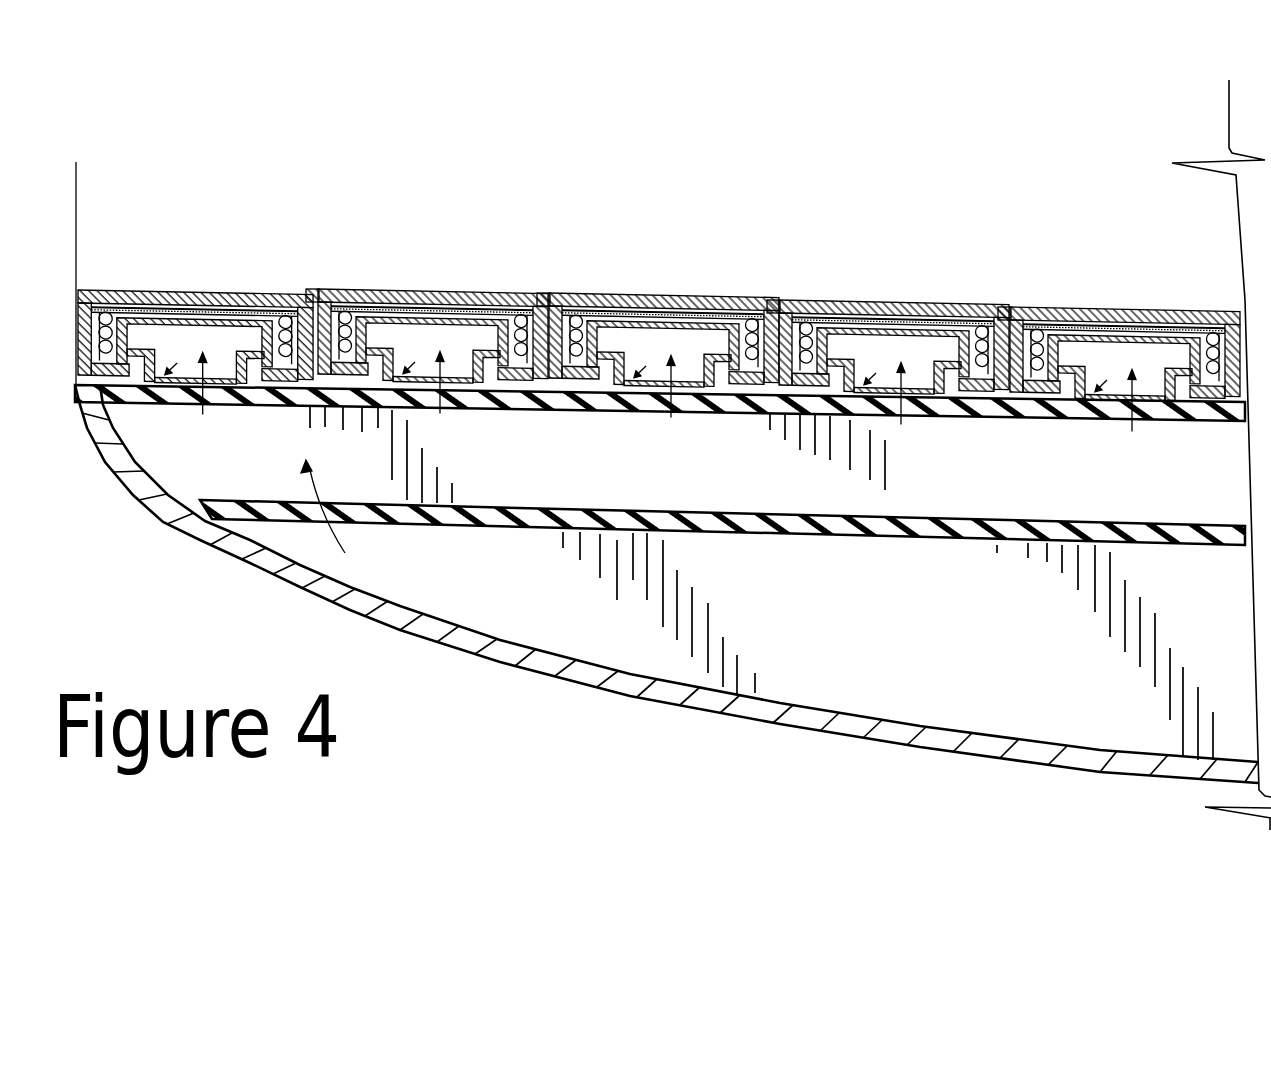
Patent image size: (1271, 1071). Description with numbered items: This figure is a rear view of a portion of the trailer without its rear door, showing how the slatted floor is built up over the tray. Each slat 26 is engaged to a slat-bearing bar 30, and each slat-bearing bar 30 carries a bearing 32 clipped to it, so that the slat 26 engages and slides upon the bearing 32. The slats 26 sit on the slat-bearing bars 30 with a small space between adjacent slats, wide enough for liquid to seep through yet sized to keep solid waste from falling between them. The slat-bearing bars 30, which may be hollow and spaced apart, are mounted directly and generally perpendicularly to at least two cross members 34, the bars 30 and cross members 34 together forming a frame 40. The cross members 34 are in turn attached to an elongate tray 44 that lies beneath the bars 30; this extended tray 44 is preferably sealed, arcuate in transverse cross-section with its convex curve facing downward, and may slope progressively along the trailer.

The slat 26 is at (659, 296).
The bearing 32 is at (658, 270).
The slat-bearing bar 30 is at (480, 387).
The cross member 34 is at (143, 442).
The frame 40 is at (183, 461).
The elongate tray 44 is at (468, 588).